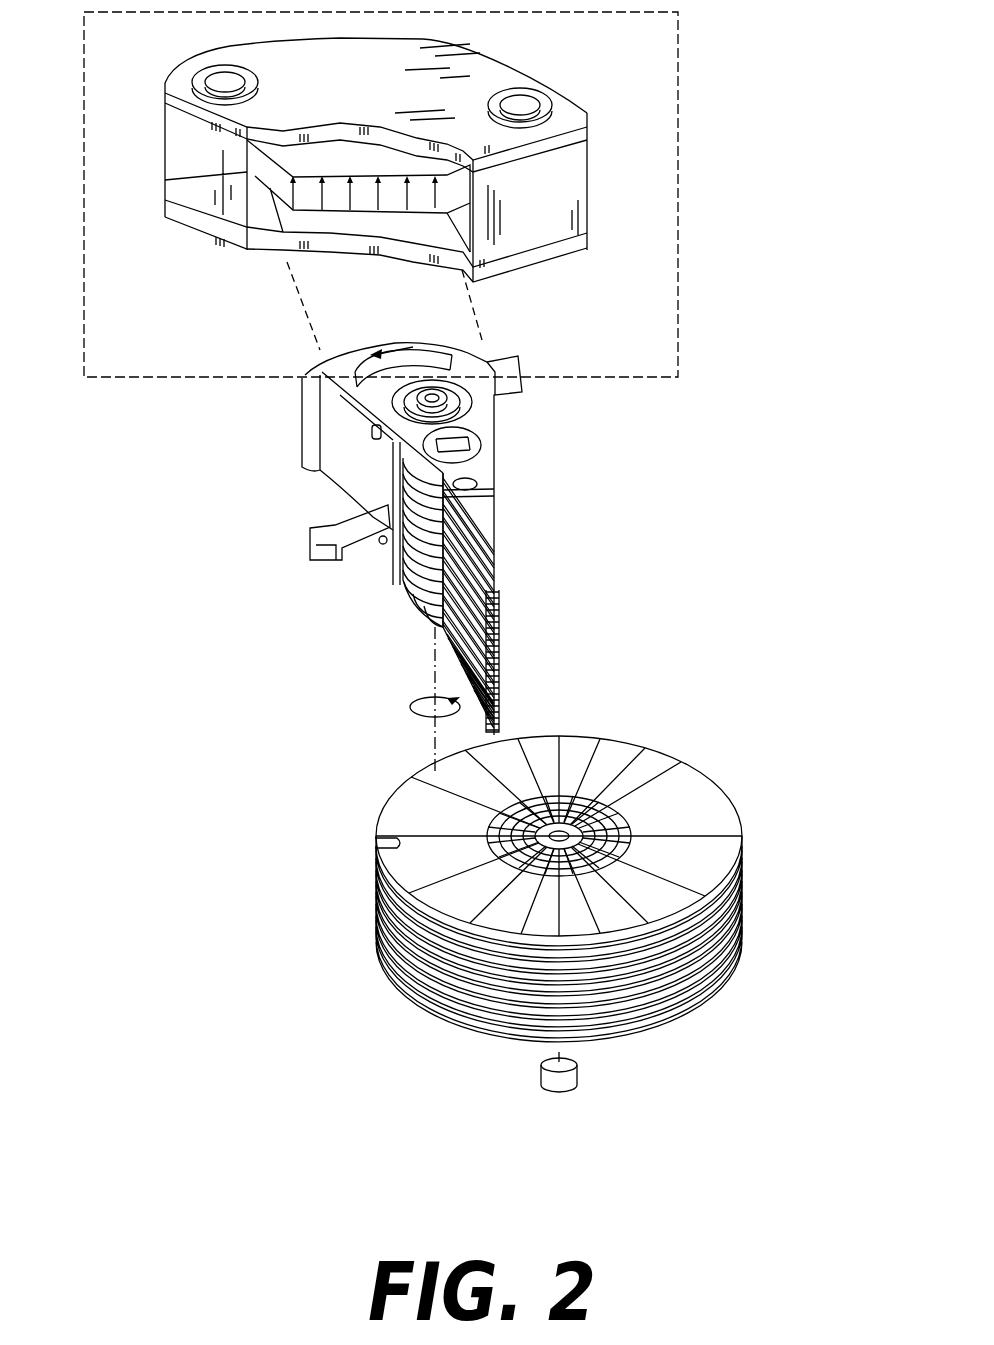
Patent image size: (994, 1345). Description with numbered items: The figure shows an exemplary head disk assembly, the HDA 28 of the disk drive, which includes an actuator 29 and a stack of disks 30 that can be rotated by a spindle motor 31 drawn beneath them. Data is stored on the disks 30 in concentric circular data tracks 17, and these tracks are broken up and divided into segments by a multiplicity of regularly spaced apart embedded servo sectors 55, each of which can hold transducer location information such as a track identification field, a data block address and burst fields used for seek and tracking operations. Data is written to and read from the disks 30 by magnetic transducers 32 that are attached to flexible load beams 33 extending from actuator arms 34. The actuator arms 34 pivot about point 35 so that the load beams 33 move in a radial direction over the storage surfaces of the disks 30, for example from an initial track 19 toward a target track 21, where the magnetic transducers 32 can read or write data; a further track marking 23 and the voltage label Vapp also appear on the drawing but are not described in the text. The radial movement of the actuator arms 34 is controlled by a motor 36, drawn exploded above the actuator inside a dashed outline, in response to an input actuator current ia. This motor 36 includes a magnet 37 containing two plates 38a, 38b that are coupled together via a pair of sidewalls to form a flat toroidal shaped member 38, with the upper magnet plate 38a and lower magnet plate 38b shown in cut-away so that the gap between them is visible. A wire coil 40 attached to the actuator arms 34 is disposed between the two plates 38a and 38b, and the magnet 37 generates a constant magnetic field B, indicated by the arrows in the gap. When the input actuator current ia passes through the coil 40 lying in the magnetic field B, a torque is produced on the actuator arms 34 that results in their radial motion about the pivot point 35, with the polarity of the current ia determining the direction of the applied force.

The data tracks 17 is at (587, 792).
The initial track 19 is at (613, 813).
The target track 21 is at (613, 835).
The servo sectors 23 is at (617, 790).
The HDA 28 is at (648, 472).
The actuator 29 is at (153, 460).
The disks 30 is at (590, 1012).
The spindle motor 31 is at (543, 1074).
The magnetic transducers 32 is at (500, 593).
The flexible load beams 33 is at (490, 535).
The actuator arms 34 is at (493, 457).
The pivot point 35 is at (470, 400).
The motor 36 is at (678, 183).
The magnet 37 is at (476, 46).
The flat toroidal shaped member 38 is at (575, 183).
The plate 38a is at (333, 153).
The plate 38b is at (330, 228).
The wire coil 40 is at (343, 358).
The servo sectors 55 is at (373, 836).
The magnetic field B is at (165, 180).
The input actuator current ia is at (397, 350).
The applied voltage Vapp is at (447, 341).